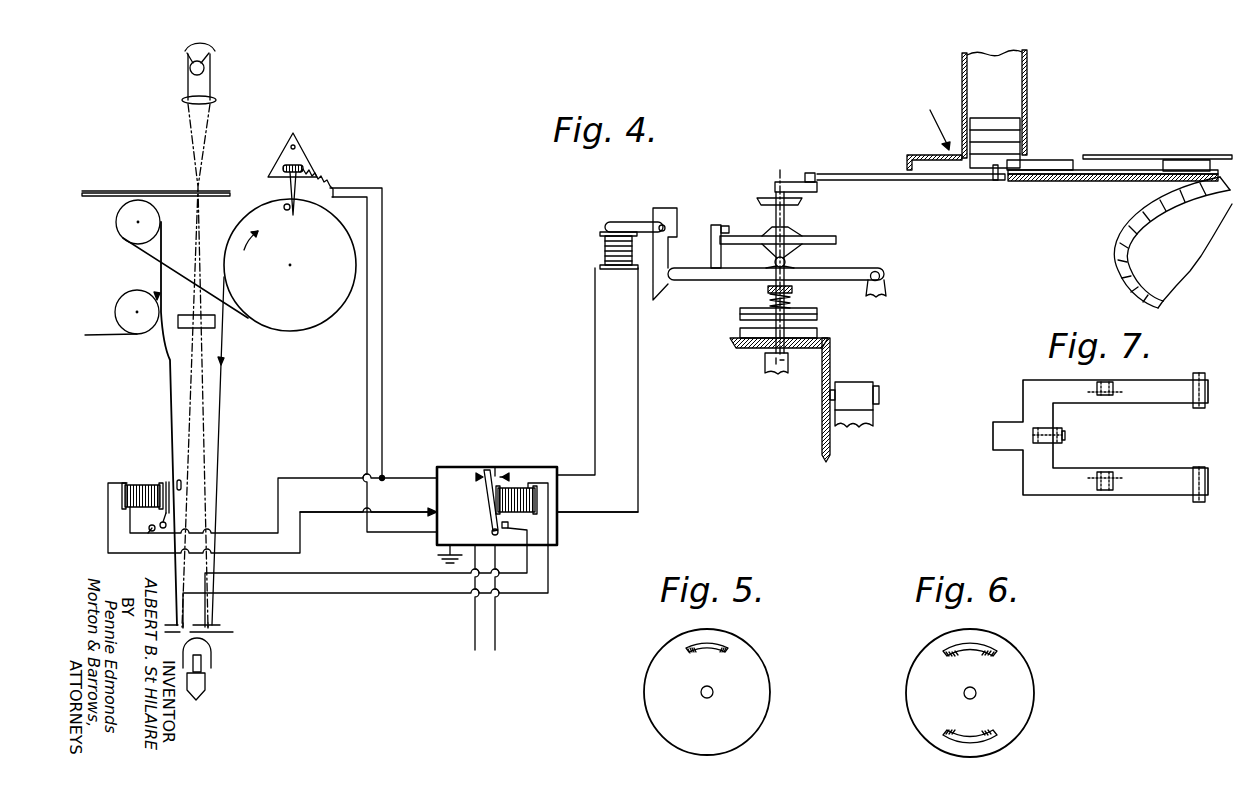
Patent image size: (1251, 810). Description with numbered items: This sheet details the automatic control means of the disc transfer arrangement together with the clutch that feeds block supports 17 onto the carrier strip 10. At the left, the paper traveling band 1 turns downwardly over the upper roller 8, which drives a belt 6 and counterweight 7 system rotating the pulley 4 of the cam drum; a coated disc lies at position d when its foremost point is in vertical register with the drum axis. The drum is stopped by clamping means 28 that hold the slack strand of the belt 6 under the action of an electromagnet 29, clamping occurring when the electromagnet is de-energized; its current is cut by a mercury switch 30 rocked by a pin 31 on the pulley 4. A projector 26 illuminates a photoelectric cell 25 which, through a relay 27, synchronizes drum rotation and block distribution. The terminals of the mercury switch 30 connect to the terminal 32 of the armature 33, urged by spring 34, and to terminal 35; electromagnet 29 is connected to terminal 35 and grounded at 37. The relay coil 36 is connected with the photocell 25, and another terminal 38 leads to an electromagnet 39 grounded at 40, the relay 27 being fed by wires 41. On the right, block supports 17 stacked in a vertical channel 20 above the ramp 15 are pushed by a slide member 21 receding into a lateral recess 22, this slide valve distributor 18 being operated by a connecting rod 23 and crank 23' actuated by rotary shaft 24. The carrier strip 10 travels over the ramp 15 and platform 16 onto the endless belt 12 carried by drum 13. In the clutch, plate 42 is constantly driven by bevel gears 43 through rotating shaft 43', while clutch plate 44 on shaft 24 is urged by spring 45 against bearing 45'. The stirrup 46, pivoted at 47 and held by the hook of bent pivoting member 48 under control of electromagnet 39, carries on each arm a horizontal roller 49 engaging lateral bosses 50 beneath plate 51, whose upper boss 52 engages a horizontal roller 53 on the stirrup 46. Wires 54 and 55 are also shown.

In FIG. 4, the paper traveling band 1 is at (86, 199).
In FIG. 4, the disc position d is at (133, 192).
In FIG. 4, the pulley 4 is at (313, 316).
In FIG. 4, the belt 6 is at (168, 388).
In FIG. 4, the counterweight 7 is at (206, 681).
In FIG. 4, the upper roller 8 is at (128, 233).
In FIG. 4, the carrier strip 10 is at (1156, 167).
In FIG. 4, the endless belt 12 is at (1210, 193).
In FIG. 4, the supporting drum 13 is at (1122, 279).
In FIG. 4, the inclined ramp 15 is at (1020, 181).
In FIG. 4, the platform 16 is at (1082, 184).
In FIG. 4, the block supports 17 is at (1013, 122).
In FIG. 4, the slide valve distributor 18 is at (923, 122).
In FIG. 4, the channel 20 is at (962, 83).
In FIG. 4, the slide member 21 is at (1000, 181).
In FIG. 4, the lateral recess 22 is at (928, 155).
In FIG. 4, the connecting rod 23 is at (911, 189).
In FIG. 4, the crank 23' is at (797, 163).
In FIG. 4, the rotary shaft 24 is at (764, 199).
In FIG. 4, the photoelectric cell 25 is at (186, 323).
In FIG. 4, the projector 26 is at (221, 58).
In FIG. 4, the relay 27 is at (547, 466).
In FIG. 4, the clamping means 28 is at (181, 480).
In FIG. 4, the electromagnet 29 is at (143, 486).
In FIG. 4, the mercury switch 30 is at (295, 170).
In FIG. 4, the pin 31 is at (285, 203).
In FIG. 4, the terminal 32 is at (497, 536).
In FIG. 4, the armature 33 is at (487, 492).
In FIG. 4, the spring 34 is at (514, 524).
In FIG. 4, the terminal 35 is at (480, 473).
In FIG. 4, the relay coil 36 is at (514, 486).
In FIG. 4, the ground 37 is at (430, 511).
In FIG. 4, the terminal 38 is at (500, 472).
In FIG. 4, the electromagnet 39 is at (603, 245).
In FIG. 4, the ground 40 is at (558, 512).
In FIG. 4, the wires 41 is at (476, 634).
In FIG. 4, the clutch plate 42 is at (829, 336).
In FIG. 4, the bevel gears 43 is at (797, 400).
In FIG. 4, the rotating shaft 43' is at (871, 392).
In FIG. 4, the clutch plate 44 is at (818, 316).
In FIG. 4, the spring 45 is at (813, 296).
In FIG. 4, the bearing 45' is at (755, 294).
In FIG. 4, the stirrup 46 is at (697, 281).
In FIG. 7, the stirrup 46 is at (1025, 478).
In FIG. 4, the pivot 47 is at (884, 274).
In FIG. 7, the pivot 47 is at (1197, 410).
In FIG. 4, the bent pivoting member 48 is at (630, 214).
In FIG. 4, the horizontal roller 49 is at (787, 262).
In FIG. 7, the horizontal roller 49 is at (1113, 386).
In FIG. 4, the lateral bosses 50 is at (765, 250).
In FIG. 6, the lateral bosses 50 is at (963, 734).
In FIG. 4, the plate 51 is at (838, 241).
In FIG. 5, the plate 51 is at (758, 676).
In FIG. 6, the plate 51 is at (1020, 681).
In FIG. 4, the boss 52 is at (793, 233).
In FIG. 5, the boss 52 is at (723, 645).
In FIG. 4, the horizontal roller 53 is at (714, 224).
In FIG. 7, the horizontal roller 53 is at (1040, 428).
In FIG. 4, the wire 54 is at (366, 386).
In FIG. 4, the light beam 55 is at (205, 167).